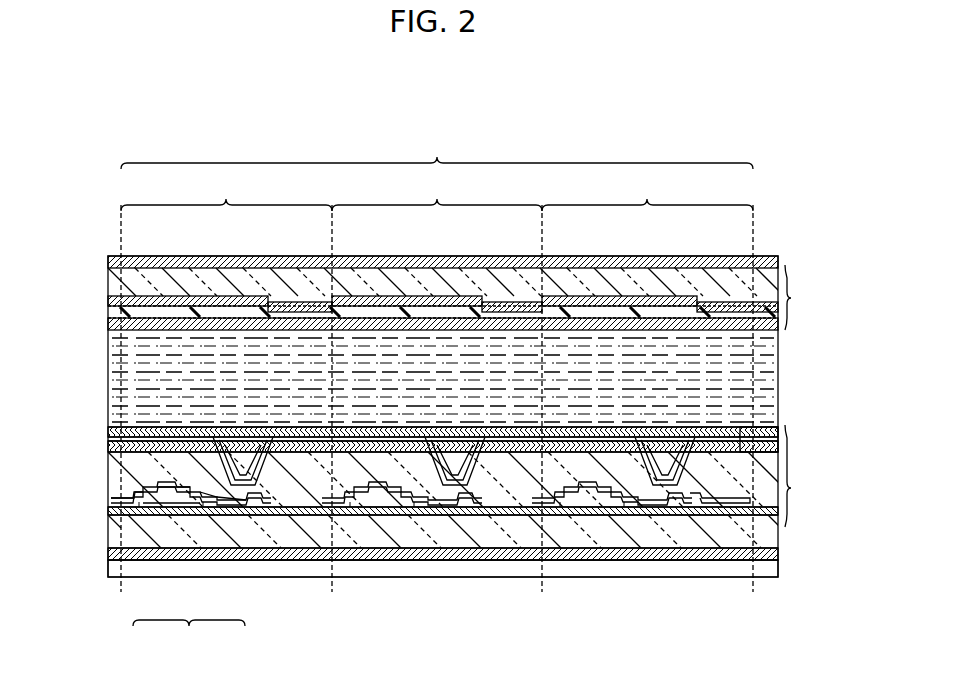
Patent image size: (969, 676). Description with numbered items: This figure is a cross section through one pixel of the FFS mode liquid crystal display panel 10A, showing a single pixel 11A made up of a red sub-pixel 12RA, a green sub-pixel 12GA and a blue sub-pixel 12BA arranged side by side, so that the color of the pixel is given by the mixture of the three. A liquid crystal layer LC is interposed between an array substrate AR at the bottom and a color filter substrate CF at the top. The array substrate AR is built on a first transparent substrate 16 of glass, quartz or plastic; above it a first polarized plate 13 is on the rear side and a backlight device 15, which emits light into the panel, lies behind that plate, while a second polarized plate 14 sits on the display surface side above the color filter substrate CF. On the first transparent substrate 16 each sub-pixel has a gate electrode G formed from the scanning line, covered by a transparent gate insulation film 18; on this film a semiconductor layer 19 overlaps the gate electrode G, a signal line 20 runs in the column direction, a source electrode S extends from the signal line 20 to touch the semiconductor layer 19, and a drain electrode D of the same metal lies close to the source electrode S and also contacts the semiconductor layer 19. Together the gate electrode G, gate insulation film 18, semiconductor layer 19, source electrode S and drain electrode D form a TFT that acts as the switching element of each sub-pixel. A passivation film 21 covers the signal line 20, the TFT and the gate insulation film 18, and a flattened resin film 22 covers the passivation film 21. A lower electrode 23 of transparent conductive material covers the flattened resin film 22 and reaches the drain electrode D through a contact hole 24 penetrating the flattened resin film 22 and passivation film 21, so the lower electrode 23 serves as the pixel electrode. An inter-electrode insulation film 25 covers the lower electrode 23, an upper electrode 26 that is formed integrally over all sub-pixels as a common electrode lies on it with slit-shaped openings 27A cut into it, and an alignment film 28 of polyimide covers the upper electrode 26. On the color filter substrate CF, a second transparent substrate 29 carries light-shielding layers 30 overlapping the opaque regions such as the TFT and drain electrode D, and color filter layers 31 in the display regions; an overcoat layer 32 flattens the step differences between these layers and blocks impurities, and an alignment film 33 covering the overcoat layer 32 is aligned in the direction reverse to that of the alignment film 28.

The liquid crystal display panel 10A is at (449, 76).
The single pixel 11A is at (437, 151).
The red sub-pixel 12RA is at (226, 193).
The green sub-pixel 12GA is at (437, 193).
The blue sub-pixel 12BA is at (647, 193).
The second polarized plate 14 is at (163, 262).
The second transparent substrate 29 is at (241, 285).
The overcoat layer 32 is at (384, 300).
The light-shielding layer 30 is at (452, 293).
The color filter layer 31 is at (527, 312).
The alignment film 33 is at (633, 322).
The color filter substrate CF is at (804, 297).
The liquid crystal layer LC is at (778, 352).
The lower electrode 23 is at (757, 430).
The inter-electrode insulation film 25 is at (140, 440).
The alignment film 28 is at (130, 432).
The slit-shaped opening 27A is at (284, 432).
The upper electrode 26 is at (395, 432).
The contact hole 24 is at (468, 437).
The array substrate AR is at (804, 476).
The source electrode S is at (133, 513).
The gate electrode G is at (172, 513).
The semiconductor layer 19 is at (207, 507).
The drain electrode D is at (237, 510).
The element TFT is at (191, 570).
The signal line 20 is at (343, 512).
The gate insulation film 18 is at (418, 503).
The passivation film 21 is at (477, 498).
The flattened resin film 22 is at (523, 495).
The first transparent substrate 16 is at (593, 538).
The first polarized plate 13 is at (657, 552).
The backlight device 15 is at (707, 567).